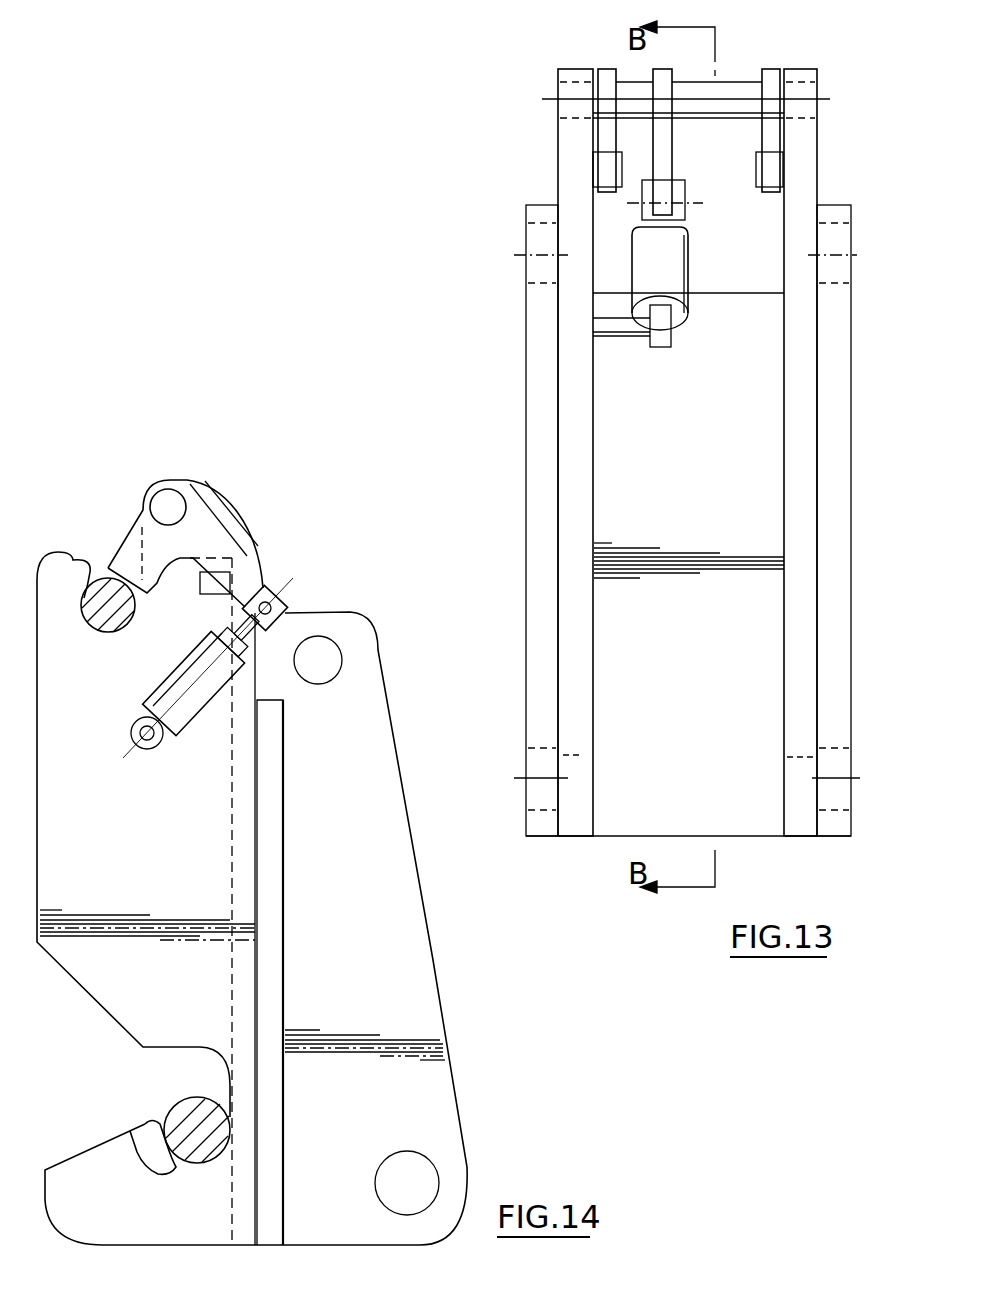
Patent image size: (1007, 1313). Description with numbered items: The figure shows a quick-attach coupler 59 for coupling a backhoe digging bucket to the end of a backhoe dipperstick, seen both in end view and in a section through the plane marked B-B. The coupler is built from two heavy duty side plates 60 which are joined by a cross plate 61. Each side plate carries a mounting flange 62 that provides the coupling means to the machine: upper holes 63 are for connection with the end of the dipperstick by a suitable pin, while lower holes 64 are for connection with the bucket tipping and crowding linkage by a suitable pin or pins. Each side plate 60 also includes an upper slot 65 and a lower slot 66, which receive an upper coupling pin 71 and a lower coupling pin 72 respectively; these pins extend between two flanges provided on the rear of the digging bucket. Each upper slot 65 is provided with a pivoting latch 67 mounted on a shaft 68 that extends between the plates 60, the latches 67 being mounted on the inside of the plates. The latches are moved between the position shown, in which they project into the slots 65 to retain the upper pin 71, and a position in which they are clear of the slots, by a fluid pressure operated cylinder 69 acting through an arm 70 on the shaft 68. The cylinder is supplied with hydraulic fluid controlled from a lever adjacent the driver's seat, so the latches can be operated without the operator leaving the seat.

In FIG. 13, the quick-attach coupler 59 is at (572, 412).
In FIG. 14, the quick-attach coupler 59 is at (175, 815).
In FIG. 13, the side plates 60 is at (575, 560).
In FIG. 14, the side plates 60 is at (128, 933).
In FIG. 13, the cross plate 61 is at (647, 450).
In FIG. 14, the cross plate 61 is at (270, 925).
In FIG. 13, the mounting flange 62 is at (540, 657).
In FIG. 14, the mounting flange 62 is at (397, 1007).
In FIG. 13, the upper holes 63 is at (530, 262).
In FIG. 14, the upper holes 63 is at (325, 652).
In FIG. 13, the lower holes 64 is at (530, 763).
In FIG. 14, the lower holes 64 is at (413, 1178).
In FIG. 14, the upper slot 65 is at (77, 560).
In FIG. 14, the lower slot 66 is at (131, 1140).
In FIG. 13, the pivoting latch 67 is at (611, 69).
In FIG. 14, the pivoting latch 67 is at (119, 558).
In FIG. 13, the shaft 68 is at (737, 84).
In FIG. 14, the shaft 68 is at (172, 504).
In FIG. 13, the fluid pressure operated cylinder 69 is at (665, 248).
In FIG. 14, the fluid pressure operated cylinder 69 is at (195, 712).
In FIG. 13, the arm 70 is at (658, 145).
In FIG. 14, the arm 70 is at (212, 537).
In FIG. 14, the upper coupling pin 71 is at (97, 582).
In FIG. 14, the lower coupling pin 72 is at (187, 1100).